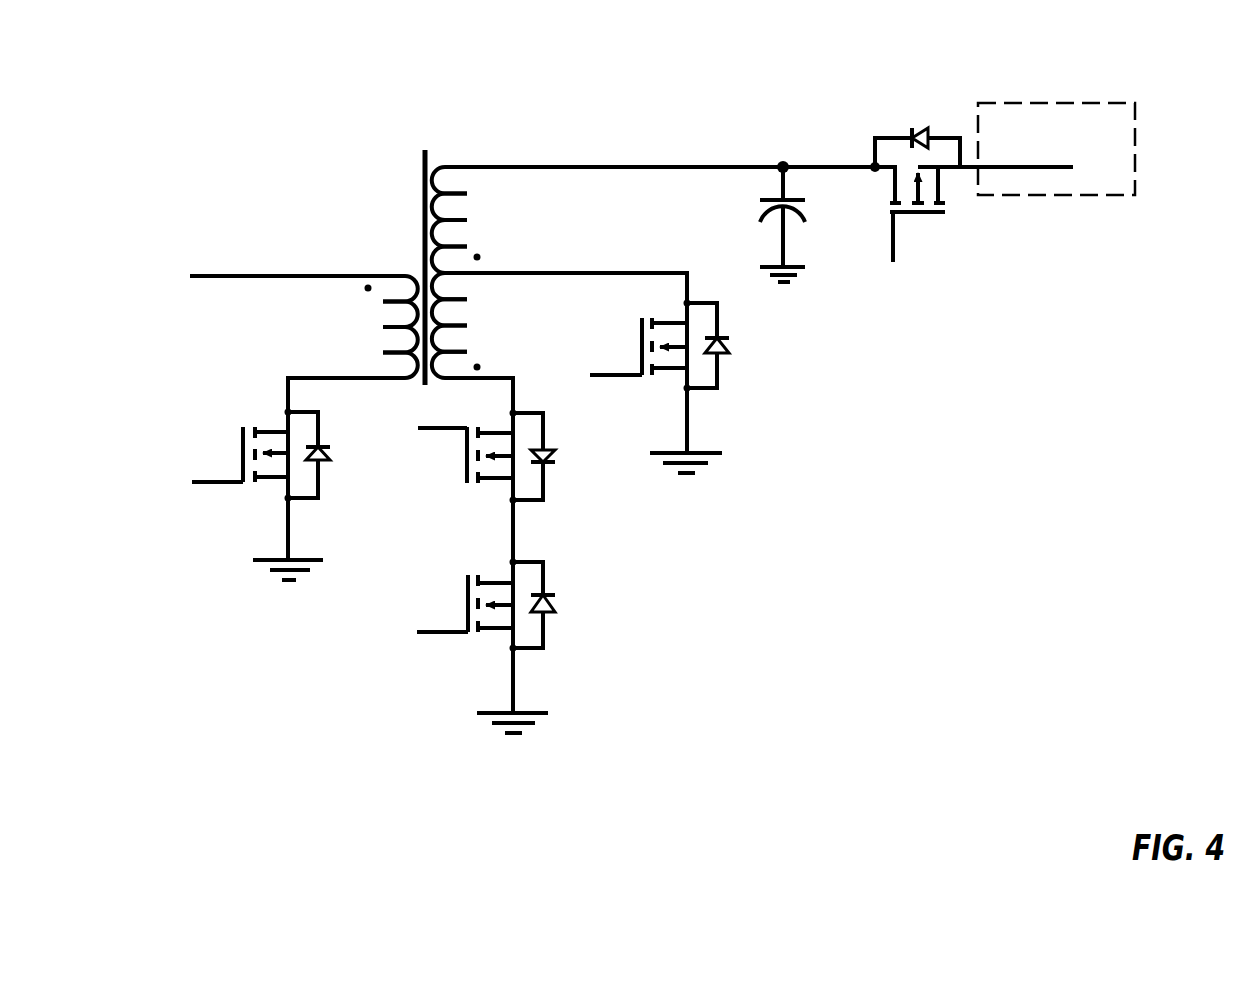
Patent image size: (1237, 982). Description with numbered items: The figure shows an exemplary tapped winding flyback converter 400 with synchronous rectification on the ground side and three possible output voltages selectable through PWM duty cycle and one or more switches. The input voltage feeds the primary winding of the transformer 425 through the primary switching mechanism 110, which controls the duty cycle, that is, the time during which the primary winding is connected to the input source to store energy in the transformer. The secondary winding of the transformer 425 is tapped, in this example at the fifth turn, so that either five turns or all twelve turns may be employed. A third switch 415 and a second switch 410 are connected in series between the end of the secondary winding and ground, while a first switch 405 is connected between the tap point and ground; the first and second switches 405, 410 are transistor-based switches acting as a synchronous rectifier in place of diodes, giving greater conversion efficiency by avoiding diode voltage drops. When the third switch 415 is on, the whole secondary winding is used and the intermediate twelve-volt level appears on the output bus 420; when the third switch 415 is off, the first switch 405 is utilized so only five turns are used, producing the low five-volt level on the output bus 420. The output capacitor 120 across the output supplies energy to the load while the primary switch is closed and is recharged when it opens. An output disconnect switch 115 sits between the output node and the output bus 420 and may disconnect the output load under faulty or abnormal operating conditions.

The tapped winding flyback converter 400 is at (251, 78).
The transformer 425 is at (388, 234).
The primary switching mechanism Q0 110 is at (244, 396).
The switch Q3 415 is at (593, 482).
The switch Q2 410 is at (603, 636).
The switch Q1 405 is at (786, 380).
The output capacitor 120 is at (771, 228).
The switch Q9 115 is at (939, 276).
The Vbus 420 is at (1142, 113).